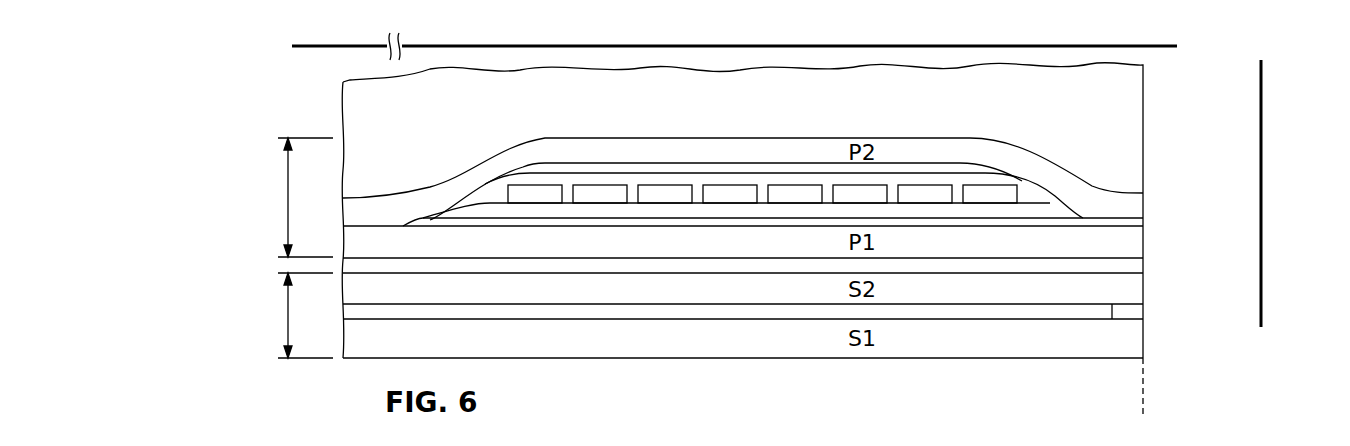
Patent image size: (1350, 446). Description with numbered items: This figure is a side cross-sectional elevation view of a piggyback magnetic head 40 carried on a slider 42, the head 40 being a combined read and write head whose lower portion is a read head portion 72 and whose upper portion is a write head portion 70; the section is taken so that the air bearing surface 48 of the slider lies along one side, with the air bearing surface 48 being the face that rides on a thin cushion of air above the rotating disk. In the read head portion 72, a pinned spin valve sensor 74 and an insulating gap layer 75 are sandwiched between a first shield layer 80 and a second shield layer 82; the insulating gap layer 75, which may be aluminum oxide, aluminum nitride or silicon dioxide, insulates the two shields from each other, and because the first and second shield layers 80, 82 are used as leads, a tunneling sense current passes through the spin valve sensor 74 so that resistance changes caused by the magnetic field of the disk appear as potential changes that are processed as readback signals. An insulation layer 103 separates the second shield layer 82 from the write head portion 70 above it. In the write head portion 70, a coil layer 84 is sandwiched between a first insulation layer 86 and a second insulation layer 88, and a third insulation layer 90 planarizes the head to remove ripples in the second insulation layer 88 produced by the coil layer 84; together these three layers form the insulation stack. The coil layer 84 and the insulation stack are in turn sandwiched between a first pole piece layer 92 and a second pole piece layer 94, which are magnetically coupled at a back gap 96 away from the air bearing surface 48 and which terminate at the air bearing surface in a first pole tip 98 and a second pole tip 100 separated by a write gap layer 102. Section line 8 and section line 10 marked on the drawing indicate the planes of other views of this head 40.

The section line 8- 8 is at (1261, 320).
The section line 10- 10 is at (1168, 47).
The magnetic head 40 is at (327, 94).
The slider 42 is at (1128, 96).
The air bearing surface 48 is at (1143, 411).
The write head portion 70 is at (288, 203).
The read head portion 72 is at (288, 320).
The spin valve sensor 74 is at (1135, 314).
The insulating gap layer 75 is at (560, 313).
The first shield layer 80 is at (912, 345).
The second shield layer 82 is at (615, 268).
The coil layer 84 is at (792, 190).
The first insulation layer 86 is at (718, 212).
The second insulation layer 88 is at (1030, 195).
The third insulation layer 90 is at (573, 170).
The first pole piece layer 92 is at (668, 248).
The second pole piece layer 94 is at (923, 148).
The back gap 96 is at (384, 225).
The first pole tip 98 is at (1143, 290).
The second pole tip 100 is at (1143, 202).
The write gap layer 102 is at (1143, 223).
The insulation layer 103 is at (970, 267).